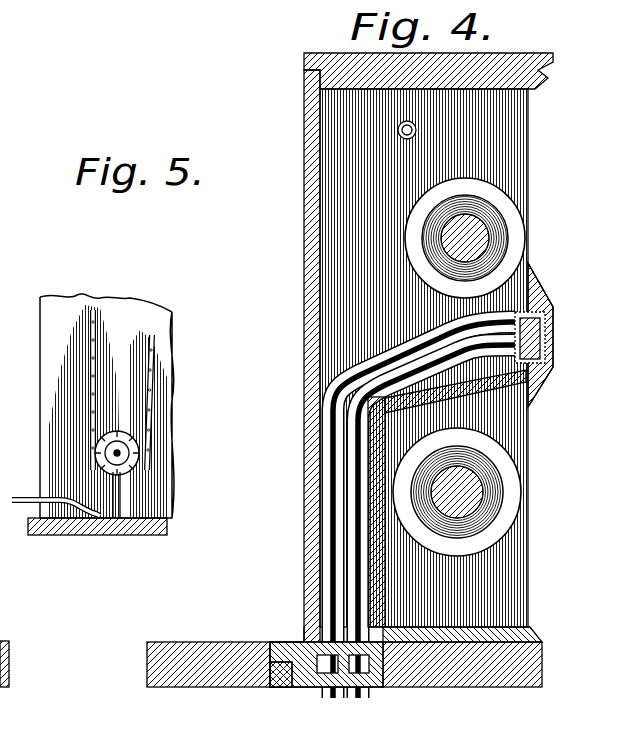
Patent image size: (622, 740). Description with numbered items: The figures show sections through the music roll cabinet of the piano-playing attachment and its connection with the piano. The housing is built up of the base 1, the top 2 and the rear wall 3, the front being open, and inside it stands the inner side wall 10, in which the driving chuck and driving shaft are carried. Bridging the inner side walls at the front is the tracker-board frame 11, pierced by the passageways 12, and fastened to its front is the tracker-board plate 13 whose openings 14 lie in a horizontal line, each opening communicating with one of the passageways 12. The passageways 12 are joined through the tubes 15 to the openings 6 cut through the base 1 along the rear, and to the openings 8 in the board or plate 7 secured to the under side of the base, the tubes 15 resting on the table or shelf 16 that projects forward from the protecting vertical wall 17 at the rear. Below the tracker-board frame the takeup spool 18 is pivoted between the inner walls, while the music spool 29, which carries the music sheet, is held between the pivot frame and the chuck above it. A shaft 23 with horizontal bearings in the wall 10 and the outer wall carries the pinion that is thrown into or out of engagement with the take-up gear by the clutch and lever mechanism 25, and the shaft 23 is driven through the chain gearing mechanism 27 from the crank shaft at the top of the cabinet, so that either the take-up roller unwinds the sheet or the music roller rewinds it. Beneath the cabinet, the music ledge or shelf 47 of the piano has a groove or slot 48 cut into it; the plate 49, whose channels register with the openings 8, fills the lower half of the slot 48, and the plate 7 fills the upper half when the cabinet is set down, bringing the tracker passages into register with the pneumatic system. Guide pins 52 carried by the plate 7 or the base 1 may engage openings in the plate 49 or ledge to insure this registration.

In FIG. 4, the base 1 is at (531, 634).
In FIG. 4, the top 2 is at (545, 72).
In FIG. 4, the rear wall 3 is at (308, 272).
In FIG. 4, the openings 6 is at (305, 627).
In FIG. 4, the board or plate 7 is at (273, 642).
In FIG. 4, the openings 8 is at (303, 688).
In FIG. 4, the inner side wall 10 is at (518, 148).
In FIG. 5, the inner side wall 10 is at (145, 320).
In FIG. 4, the tracker-board frame 11 is at (545, 312).
In FIG. 4, the passageways 12 is at (548, 352).
In FIG. 4, the tracker-board plate 13 is at (528, 337).
In FIG. 4, the openings 14 is at (522, 347).
In FIG. 4, the tubes 15 is at (472, 393).
In FIG. 4, the table or shelf 16 is at (456, 392).
In FIG. 4, the protecting vertical wall 17 is at (368, 545).
In FIG. 4, the takeup spool 18 is at (506, 517).
In FIG. 5, the shaft 23 is at (107, 455).
In FIG. 5, the clutch and lever mechanism 25 is at (80, 500).
In FIG. 5, the chain gearing mechanism 27 is at (150, 400).
In FIG. 4, the spool 29 is at (490, 232).
In FIG. 4, the music ledge or shelf 47 is at (526, 672).
In FIG. 5, the music ledge or shelf 47 is at (9, 666).
In FIG. 4, the groove or slot 48 is at (266, 688).
In FIG. 4, the plate 49 is at (378, 678).
In FIG. 4, the guide pins 52 is at (276, 688).